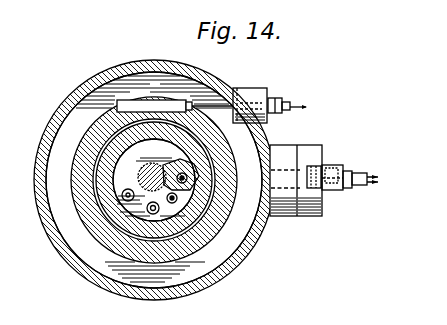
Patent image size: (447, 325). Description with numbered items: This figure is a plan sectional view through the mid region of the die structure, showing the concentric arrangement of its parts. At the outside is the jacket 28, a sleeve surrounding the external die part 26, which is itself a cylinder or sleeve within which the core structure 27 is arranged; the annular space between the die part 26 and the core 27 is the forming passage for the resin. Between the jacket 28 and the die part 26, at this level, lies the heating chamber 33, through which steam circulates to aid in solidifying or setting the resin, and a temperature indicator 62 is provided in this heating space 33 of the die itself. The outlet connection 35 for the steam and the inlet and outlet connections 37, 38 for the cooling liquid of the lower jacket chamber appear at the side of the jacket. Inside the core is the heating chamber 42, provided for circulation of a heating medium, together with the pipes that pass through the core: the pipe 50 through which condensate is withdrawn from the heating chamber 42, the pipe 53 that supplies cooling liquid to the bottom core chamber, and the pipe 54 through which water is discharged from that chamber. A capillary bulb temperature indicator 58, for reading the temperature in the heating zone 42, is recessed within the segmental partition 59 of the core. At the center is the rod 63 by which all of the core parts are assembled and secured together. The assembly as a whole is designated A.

The valve assembly A is at (140, 188).
The external die part 26 is at (83, 223).
The core structure 27 is at (102, 148).
The jacket 28 is at (100, 288).
The heating chamber 33 is at (58, 153).
The outlet connection 35 is at (329, 167).
The inlet connection 37 is at (349, 191).
The outlet connection 38 is at (343, 172).
The heating chamber 42 is at (154, 180).
The condensate pipe 50 is at (224, 231).
The cooling inlet pipe 53 is at (155, 214).
The cooling discharge pipe 54 is at (122, 197).
The temperature indicator 58 is at (178, 197).
The segmental partition 59 is at (184, 161).
The temperature indicator 62 is at (138, 103).
The central rod 63 is at (140, 173).